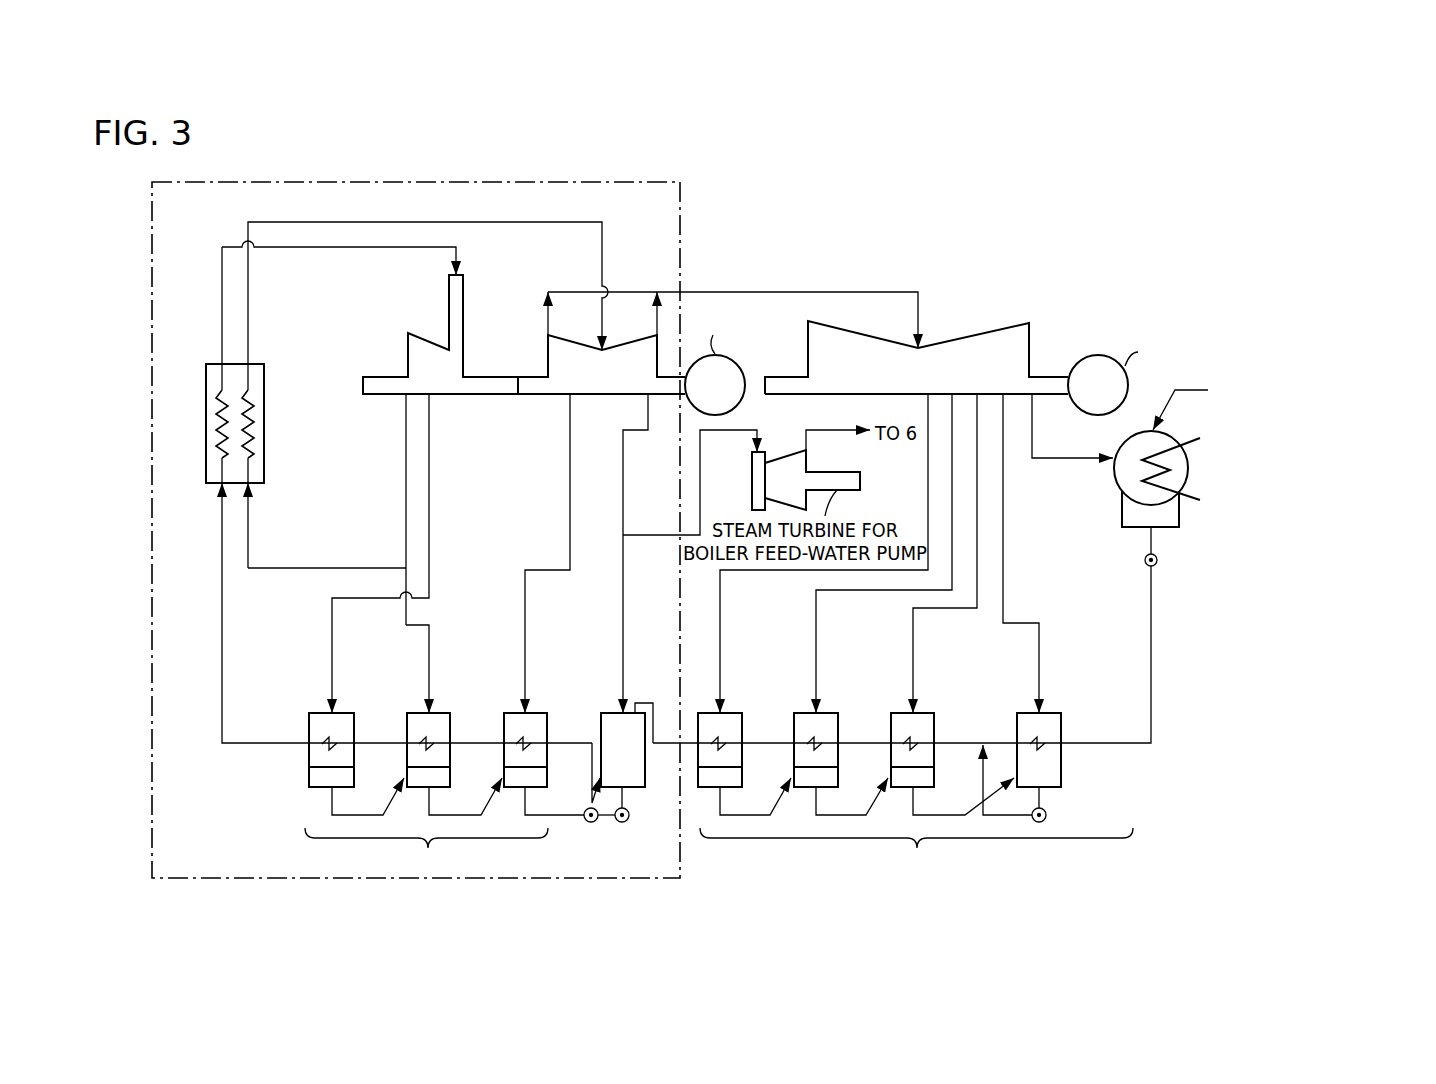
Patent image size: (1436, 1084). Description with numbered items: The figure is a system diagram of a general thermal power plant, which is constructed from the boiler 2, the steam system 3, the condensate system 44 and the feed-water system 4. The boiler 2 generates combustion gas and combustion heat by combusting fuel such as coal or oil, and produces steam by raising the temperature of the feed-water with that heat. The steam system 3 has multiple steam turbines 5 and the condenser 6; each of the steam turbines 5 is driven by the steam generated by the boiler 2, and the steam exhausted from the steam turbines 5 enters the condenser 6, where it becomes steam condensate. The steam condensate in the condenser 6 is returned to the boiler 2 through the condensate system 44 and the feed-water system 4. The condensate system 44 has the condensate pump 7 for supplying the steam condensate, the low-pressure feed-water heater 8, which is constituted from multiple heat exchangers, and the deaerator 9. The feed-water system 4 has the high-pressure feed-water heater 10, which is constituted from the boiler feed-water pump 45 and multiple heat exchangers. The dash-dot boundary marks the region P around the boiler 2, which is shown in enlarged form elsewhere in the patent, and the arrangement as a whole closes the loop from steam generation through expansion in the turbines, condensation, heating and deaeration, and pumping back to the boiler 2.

The boiler 2 is at (205, 475).
The steam system 3 is at (248, 335).
The feed-water system 4 is at (252, 746).
The steam turbine 5 is at (463, 343).
The condenser 6 is at (1187, 482).
The condensate pump 7 is at (1158, 560).
The low-pressure feed-water heater 8 is at (915, 797).
The deaerator 9 is at (636, 790).
The high-pressure feed-water heater 10 is at (444, 797).
The condensate system 44 is at (1153, 724).
The boiler feed-water pump 45 is at (595, 823).
The region P is at (682, 232).